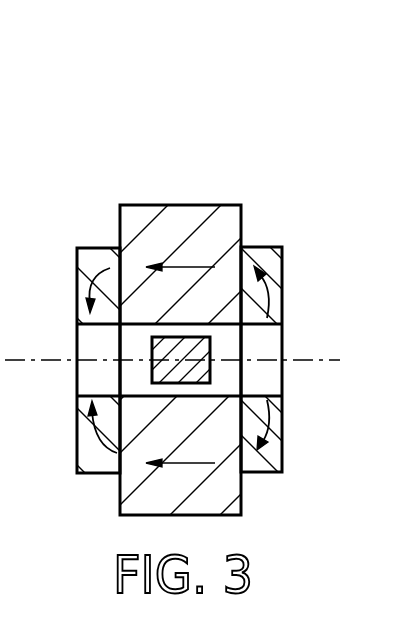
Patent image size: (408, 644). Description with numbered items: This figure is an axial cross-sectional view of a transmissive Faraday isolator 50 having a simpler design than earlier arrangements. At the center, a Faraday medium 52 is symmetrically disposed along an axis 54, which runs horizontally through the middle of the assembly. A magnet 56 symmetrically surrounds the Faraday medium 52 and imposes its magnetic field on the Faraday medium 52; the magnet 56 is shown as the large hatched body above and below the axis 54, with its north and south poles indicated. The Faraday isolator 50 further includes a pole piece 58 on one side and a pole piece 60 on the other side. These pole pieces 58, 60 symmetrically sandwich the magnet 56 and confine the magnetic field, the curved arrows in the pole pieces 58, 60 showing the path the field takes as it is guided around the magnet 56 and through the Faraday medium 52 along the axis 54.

The transmissive Faraday isolator 50 is at (195, 100).
The Faraday medium 52 is at (212, 360).
The axis 54 is at (297, 358).
The magnet 56 is at (207, 205).
The pole piece 58 is at (77, 275).
The pole piece 60 is at (270, 247).